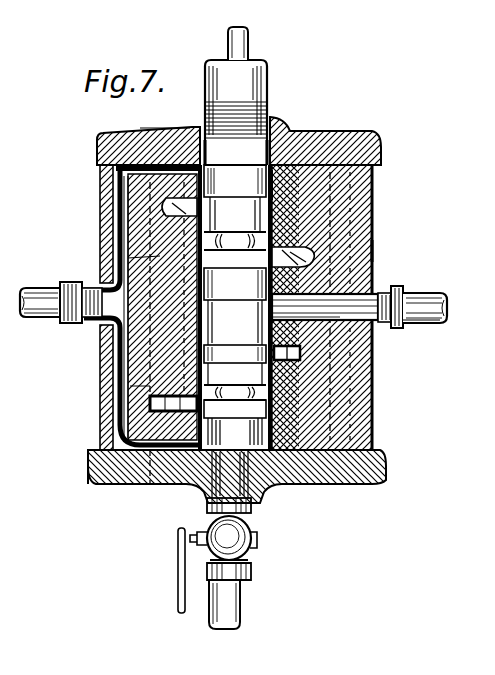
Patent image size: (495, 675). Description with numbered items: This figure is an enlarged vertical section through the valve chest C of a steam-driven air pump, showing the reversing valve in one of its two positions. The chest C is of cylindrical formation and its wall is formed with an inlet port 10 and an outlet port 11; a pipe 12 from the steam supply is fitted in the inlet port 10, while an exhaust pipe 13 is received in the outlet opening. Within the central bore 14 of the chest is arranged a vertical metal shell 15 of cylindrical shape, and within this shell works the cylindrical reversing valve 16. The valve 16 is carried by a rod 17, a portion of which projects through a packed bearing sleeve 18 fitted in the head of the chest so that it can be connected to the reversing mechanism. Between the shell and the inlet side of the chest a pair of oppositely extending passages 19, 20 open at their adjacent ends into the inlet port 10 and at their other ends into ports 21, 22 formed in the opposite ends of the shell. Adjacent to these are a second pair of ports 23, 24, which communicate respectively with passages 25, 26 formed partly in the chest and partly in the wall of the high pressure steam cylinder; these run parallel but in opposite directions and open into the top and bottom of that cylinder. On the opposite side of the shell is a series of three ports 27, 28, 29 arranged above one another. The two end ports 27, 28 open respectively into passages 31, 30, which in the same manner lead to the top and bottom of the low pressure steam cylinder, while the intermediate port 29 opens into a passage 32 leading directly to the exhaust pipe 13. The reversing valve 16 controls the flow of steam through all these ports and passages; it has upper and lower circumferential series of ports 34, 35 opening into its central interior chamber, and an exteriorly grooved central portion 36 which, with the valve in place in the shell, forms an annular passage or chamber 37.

The inlet port 10 is at (84, 318).
The outlet port 11 is at (430, 300).
The pipe 12 is at (34, 288).
The exhaust pipe 13 is at (430, 323).
The central bore 14 is at (266, 168).
The vertical metal shell 15 is at (274, 170).
The reversing valve 16 is at (235, 307).
The rod 17 is at (250, 48).
The packed bearing sleeve 18 is at (268, 92).
The passage 19 is at (118, 197).
The passage 20 is at (150, 402).
The port 21 is at (178, 165).
The port 22 is at (186, 450).
The port 23 is at (168, 208).
The port 24 is at (130, 386).
The passage 25 is at (100, 152).
The passage 26 is at (130, 470).
The port 27 is at (318, 244).
The port 28 is at (300, 352).
The intermediate port 29 is at (330, 296).
The passage 30 is at (386, 149).
The passage 31 is at (384, 457).
The passage 32 is at (400, 292).
The upper circumferential series of ports 34 is at (128, 258).
The lower circumferential series of ports 35 is at (118, 432).
The exteriorly grooved central portion 36 is at (128, 352).
The annular passage or chamber 37 is at (124, 340).
The valve chest C is at (373, 252).